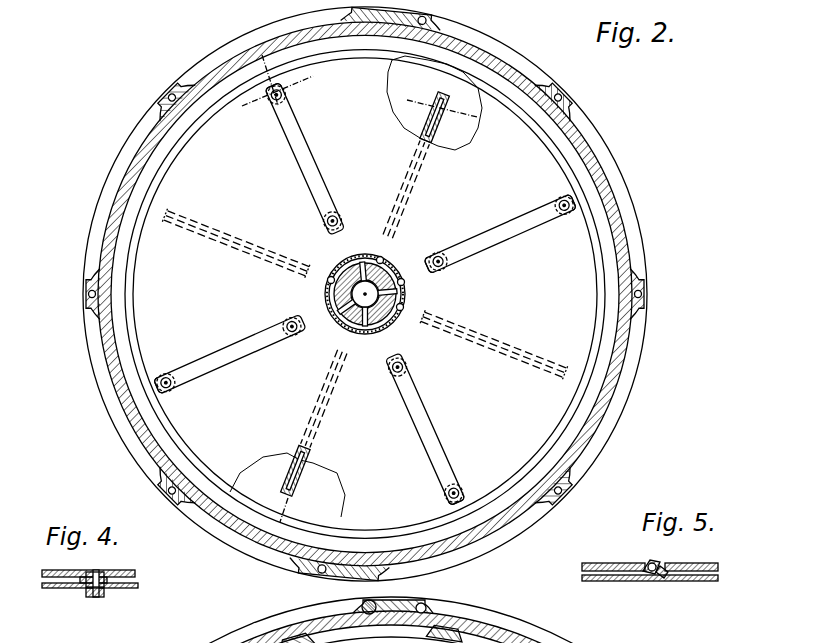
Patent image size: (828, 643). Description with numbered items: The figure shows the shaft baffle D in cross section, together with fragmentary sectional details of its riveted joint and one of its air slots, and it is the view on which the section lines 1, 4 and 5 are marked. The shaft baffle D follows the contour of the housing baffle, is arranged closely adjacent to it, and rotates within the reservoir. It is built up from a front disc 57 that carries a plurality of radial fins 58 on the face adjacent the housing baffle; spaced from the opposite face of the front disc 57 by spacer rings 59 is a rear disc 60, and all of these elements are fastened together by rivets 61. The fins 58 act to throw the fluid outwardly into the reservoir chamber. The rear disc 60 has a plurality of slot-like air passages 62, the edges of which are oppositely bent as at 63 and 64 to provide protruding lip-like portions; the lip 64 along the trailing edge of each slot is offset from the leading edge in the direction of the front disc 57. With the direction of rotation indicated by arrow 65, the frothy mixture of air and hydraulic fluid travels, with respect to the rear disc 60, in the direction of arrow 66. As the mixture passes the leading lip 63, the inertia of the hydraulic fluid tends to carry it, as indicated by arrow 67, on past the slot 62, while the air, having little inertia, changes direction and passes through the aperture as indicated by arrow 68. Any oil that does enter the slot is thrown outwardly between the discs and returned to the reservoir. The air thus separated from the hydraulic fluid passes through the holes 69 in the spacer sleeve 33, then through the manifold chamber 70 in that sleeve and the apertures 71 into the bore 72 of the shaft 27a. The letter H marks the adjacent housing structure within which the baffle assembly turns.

In FIG. 2, the outer rim ring H is at (604, 145).
In FIG. 2, the shaft baffle D is at (593, 222).
In FIG. 2, the front disc 57 is at (347, 68).
In FIG. 4, the front disc 57 is at (50, 589).
In FIG. 5, the front disc 57 is at (708, 582).
In FIG. 2, the rear disc 60 is at (449, 78).
In FIG. 4, the rear disc 60 is at (63, 570).
In FIG. 5, the rear disc 60 is at (718, 566).
In FIG. 2, the arrow 65 is at (528, 40).
In FIG. 5, the arrow 65 is at (680, 548).
In FIG. 2, the radial fins 58 is at (313, 173).
In FIG. 4, the radial fins 58 is at (106, 592).
In FIG. 2, the spacer rings 59 is at (438, 252).
In FIG. 4, the spacer rings 59 is at (108, 580).
In FIG. 2, the rivets 61 is at (558, 212).
In FIG. 4, the rivets 61 is at (98, 598).
In FIG. 2, the slot-like air passages 62 is at (447, 77).
In FIG. 5, the slot-like air passages 62 is at (655, 576).
In FIG. 2, the leading lip 63 is at (430, 103).
In FIG. 5, the leading lip 63 is at (650, 573).
In FIG. 2, the trailing lip 64 is at (452, 125).
In FIG. 5, the trailing lip 64 is at (672, 579).
In FIG. 2, the section line 5- 5 is at (409, 112).
In FIG. 2, the section line 4- 4 is at (243, 100).
In FIG. 2, the section line 1- 1 is at (284, 62).
In FIG. 2, the shaft 27a is at (343, 262).
In FIG. 2, the spacer sleeve 33 is at (395, 323).
In FIG. 2, the manifold chamber 70 is at (382, 289).
In FIG. 2, the bore 72 is at (352, 295).
In FIG. 2, the apertures 71 is at (342, 317).
In FIG. 2, the holes 69 is at (381, 262).
In FIG. 5, the arrow 66 is at (623, 556).
In FIG. 5, the arrow 67 is at (648, 561).
In FIG. 5, the arrow 68 is at (666, 565).